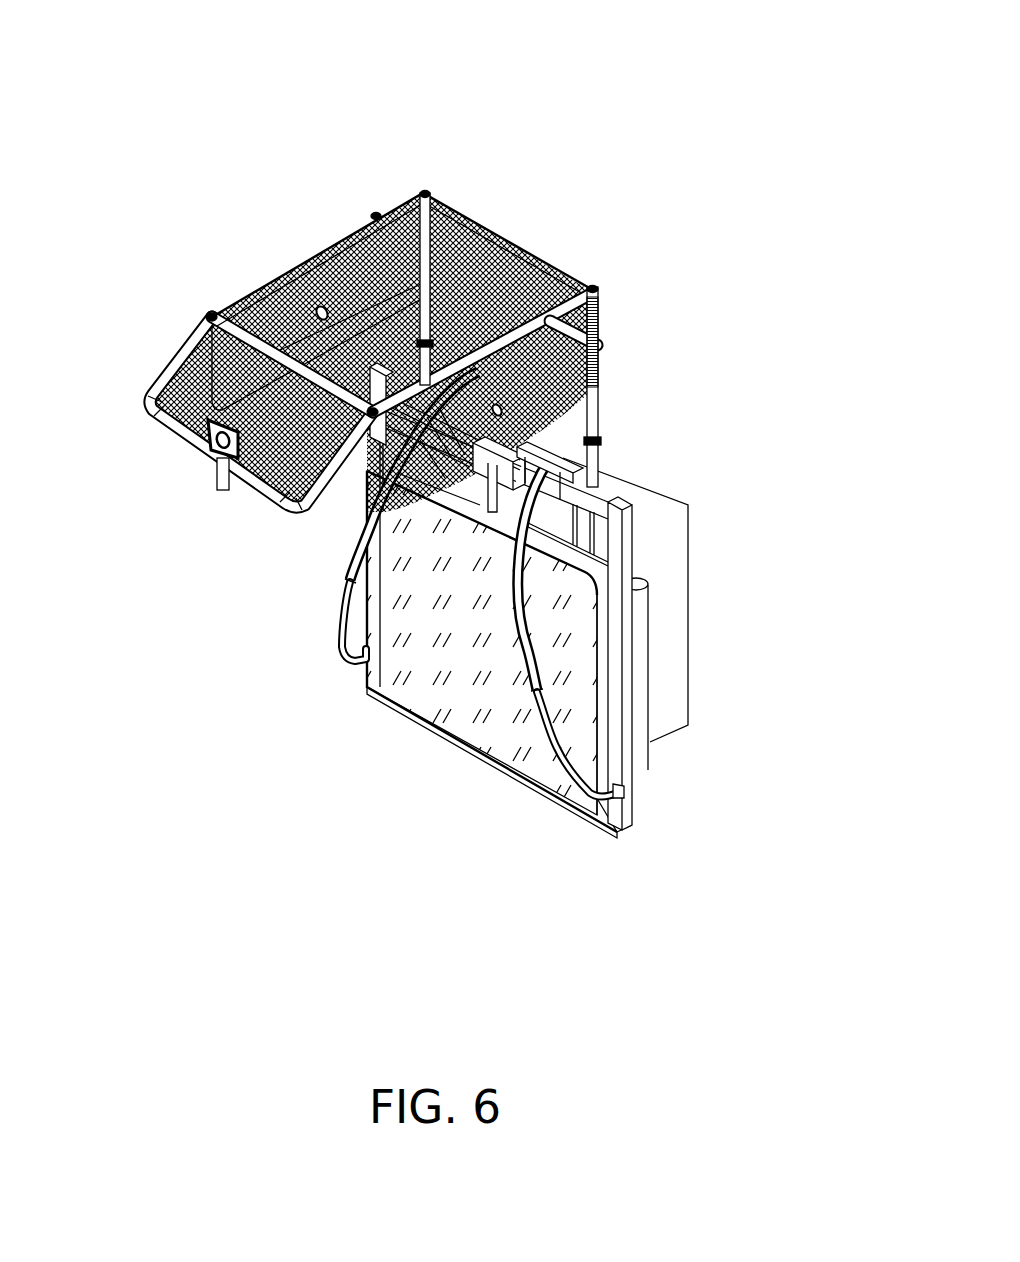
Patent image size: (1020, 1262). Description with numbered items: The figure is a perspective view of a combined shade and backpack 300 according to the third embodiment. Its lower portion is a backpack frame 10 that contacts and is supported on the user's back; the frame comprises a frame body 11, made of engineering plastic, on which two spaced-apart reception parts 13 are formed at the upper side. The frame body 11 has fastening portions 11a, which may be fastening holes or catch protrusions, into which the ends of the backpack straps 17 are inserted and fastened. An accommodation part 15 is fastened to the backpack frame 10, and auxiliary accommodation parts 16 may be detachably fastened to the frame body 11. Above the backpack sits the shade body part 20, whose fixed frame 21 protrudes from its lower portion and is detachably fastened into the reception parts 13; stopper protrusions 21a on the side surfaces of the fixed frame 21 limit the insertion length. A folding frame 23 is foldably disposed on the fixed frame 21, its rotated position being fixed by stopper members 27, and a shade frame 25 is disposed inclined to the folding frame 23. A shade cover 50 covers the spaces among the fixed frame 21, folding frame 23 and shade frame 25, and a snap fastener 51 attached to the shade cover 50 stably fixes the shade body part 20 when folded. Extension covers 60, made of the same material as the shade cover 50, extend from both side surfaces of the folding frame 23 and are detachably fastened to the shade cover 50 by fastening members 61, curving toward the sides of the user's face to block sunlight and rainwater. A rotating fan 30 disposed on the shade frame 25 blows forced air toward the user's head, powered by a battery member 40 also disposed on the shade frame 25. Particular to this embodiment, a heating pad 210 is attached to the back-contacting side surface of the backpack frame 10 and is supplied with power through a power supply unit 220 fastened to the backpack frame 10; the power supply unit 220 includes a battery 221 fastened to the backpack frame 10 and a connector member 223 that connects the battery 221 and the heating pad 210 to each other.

The combined shade and backpack 300 is at (487, 118).
The backpack frame 10 is at (746, 533).
The frame body 11 is at (627, 584).
The fastening portions 11a is at (630, 800).
The reception parts 13 is at (593, 533).
The accommodation part 15 is at (688, 722).
The auxiliary accommodation parts 16 is at (645, 768).
The backpack straps 17 is at (348, 562).
The shade body part 20 is at (294, 150).
The fixed frame 21 is at (300, 264).
The stopper protrusions 21a is at (481, 300).
The folding frame 23 is at (243, 330).
The shade frame 25 is at (192, 345).
The stopper members 27 is at (378, 212).
The rotating fan 30 is at (207, 447).
The battery member 40 is at (600, 387).
The shade cover 50 is at (457, 253).
The snap fastener 51 is at (602, 395).
The extension covers 60 is at (418, 230).
The fastening members 61 is at (600, 318).
The heating pad 210 is at (367, 690).
The power supply unit 220 is at (612, 955).
The battery 221 is at (655, 494).
The connector member 223 is at (400, 690).